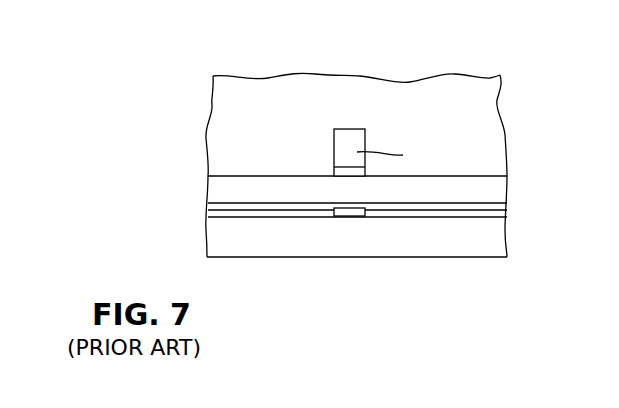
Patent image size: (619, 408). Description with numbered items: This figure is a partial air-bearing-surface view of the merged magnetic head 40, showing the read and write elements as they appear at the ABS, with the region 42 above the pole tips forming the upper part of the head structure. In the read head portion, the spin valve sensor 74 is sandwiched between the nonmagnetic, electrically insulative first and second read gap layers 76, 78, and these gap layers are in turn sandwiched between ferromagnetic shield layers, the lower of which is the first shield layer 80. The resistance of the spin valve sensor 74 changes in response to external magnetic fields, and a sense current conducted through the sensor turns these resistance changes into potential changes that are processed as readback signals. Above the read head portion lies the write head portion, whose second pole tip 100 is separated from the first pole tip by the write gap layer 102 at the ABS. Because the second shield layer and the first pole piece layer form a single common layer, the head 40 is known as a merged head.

The merged magnetic head 40 is at (522, 90).
The upper dielectric layer 42 is at (217, 103).
The second read gap layer 78 is at (468, 205).
The first read gap layer 76 is at (265, 217).
The first shield layer 80 is at (497, 240).
The spin valve sensor 74 is at (350, 216).
The second pole tip 100 is at (355, 135).
The write gap layer 102 is at (347, 167).